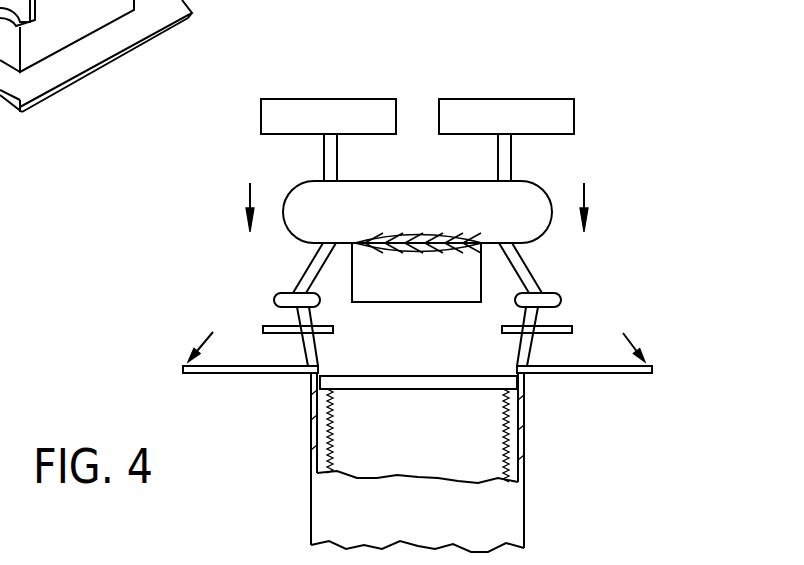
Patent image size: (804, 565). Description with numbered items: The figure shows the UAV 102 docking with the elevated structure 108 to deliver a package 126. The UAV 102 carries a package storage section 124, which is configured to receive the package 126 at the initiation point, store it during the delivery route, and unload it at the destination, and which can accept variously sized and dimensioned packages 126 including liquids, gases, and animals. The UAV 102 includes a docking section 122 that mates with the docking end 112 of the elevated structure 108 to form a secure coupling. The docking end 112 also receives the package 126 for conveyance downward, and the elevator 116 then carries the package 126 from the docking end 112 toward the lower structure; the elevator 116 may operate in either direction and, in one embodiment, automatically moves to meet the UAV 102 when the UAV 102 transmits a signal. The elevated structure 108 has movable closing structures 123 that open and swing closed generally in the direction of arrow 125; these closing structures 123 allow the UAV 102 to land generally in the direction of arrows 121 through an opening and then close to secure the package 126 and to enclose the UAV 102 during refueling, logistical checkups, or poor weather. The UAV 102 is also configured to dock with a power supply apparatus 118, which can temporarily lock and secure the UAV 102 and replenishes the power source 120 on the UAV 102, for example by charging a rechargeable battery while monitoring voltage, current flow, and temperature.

The UAV 102 is at (622, 61).
The elevated structure 108 is at (527, 535).
The docking end 112 is at (526, 377).
The elevator 116 is at (369, 380).
The power supply apparatus 118 is at (268, 326).
The power source 120 is at (327, 99).
The arrows 121 is at (250, 195).
The docking section 122 is at (300, 293).
The movable closing structures 123 is at (245, 375).
The package storage section 124 is at (423, 234).
The arrow 125 is at (213, 332).
The package 126 is at (382, 288).